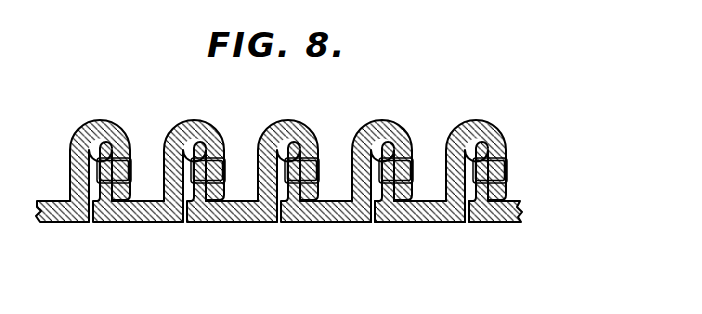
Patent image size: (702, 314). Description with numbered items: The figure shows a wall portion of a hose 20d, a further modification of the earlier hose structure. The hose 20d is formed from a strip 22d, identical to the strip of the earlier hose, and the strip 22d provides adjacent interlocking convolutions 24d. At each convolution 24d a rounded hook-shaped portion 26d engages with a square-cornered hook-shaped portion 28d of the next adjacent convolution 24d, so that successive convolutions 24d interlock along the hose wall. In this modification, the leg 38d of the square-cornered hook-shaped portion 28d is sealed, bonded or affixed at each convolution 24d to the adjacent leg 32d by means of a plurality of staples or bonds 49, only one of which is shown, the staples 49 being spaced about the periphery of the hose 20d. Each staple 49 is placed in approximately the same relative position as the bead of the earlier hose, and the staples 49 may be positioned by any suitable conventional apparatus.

The hose 20d is at (528, 106).
The strip 22d is at (522, 217).
The convolution 24d is at (371, 227).
The rounded hook-shaped portion 26d is at (180, 115).
The square-cornered hook-shaped portion 28d is at (227, 226).
The leg 32d is at (226, 158).
The leg 38d is at (103, 171).
The staple 49 is at (317, 161).